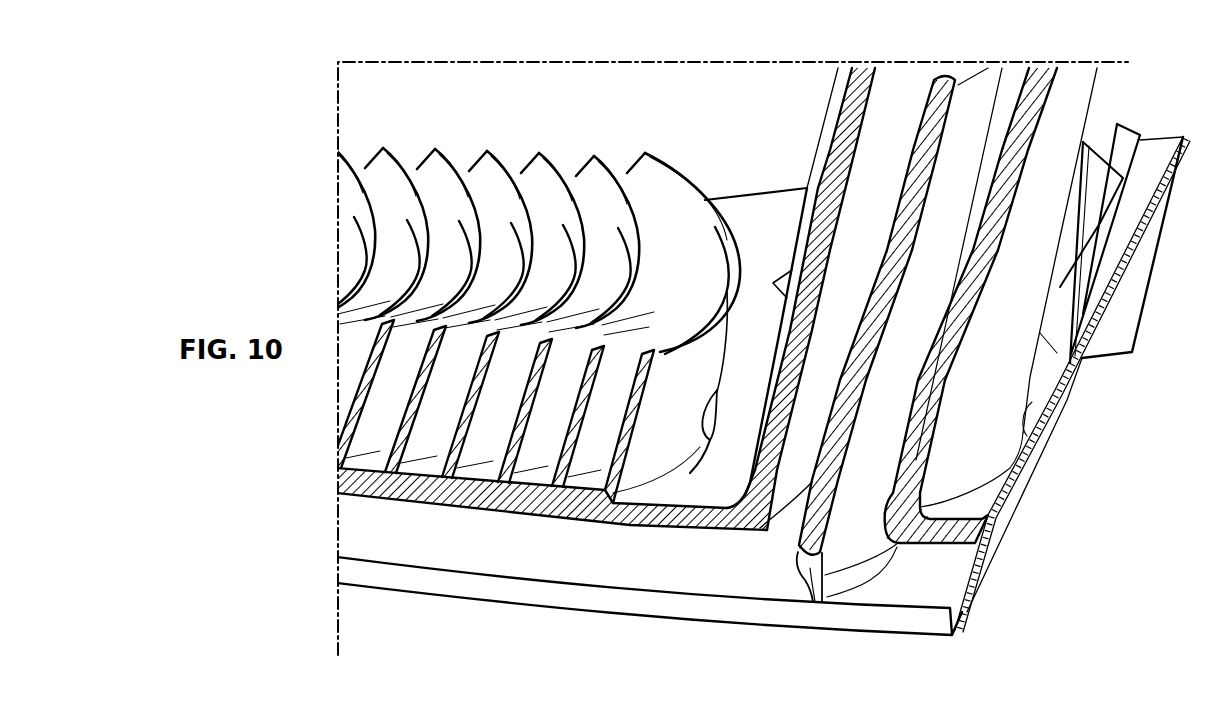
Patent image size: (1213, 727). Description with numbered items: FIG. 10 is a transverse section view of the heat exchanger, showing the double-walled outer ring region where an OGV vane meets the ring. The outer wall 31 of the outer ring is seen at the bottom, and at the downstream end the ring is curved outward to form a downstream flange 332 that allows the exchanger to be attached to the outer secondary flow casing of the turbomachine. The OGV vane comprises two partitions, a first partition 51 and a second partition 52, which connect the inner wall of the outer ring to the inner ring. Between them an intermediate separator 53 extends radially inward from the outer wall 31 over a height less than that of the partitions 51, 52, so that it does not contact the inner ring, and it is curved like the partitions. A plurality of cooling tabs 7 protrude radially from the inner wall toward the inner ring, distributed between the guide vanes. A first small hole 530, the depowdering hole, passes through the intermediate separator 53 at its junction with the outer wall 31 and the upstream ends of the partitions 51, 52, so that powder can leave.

The cooling tabs 7 is at (602, 178).
The second partition 52 is at (862, 67).
The intermediate separator 53 is at (944, 77).
The first partition 51 is at (1040, 76).
The downstream flange 332 is at (1117, 327).
The outer wall 31 is at (867, 622).
The first small hole 530 is at (803, 584).